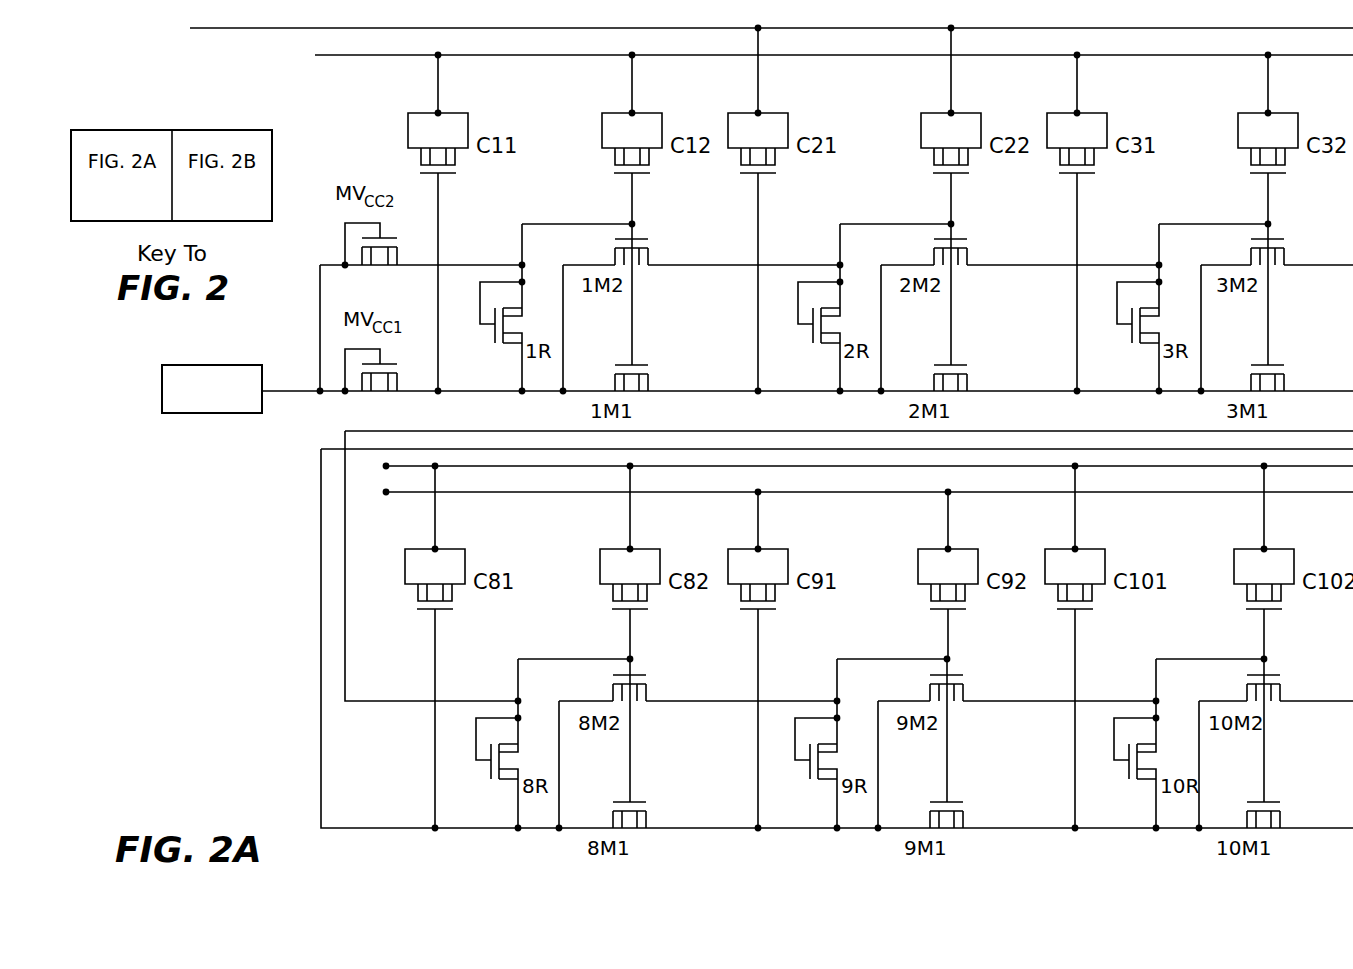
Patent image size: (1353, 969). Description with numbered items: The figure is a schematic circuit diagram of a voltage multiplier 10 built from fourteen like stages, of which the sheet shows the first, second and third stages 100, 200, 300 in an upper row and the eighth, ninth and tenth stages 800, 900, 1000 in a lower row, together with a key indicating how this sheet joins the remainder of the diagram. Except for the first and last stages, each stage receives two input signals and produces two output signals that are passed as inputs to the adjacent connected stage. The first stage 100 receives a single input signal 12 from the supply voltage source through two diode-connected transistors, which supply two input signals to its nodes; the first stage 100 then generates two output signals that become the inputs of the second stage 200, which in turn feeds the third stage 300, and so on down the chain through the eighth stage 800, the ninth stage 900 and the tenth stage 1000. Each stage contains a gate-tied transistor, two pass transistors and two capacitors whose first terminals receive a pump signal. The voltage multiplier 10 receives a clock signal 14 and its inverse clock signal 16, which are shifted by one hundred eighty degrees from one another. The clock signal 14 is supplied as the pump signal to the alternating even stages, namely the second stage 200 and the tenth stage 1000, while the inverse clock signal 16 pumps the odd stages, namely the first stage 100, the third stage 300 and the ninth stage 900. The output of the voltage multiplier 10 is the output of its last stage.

The voltage multiplier 10 is at (266, 566).
The input signal 12 is at (246, 413).
The clock signal CLK 14 is at (217, 28).
The inverse clock signal 16 is at (348, 55).
The first stage 100 is at (577, 209).
The second stage 200 is at (895, 209).
The third stage 300 is at (1213, 209).
The eighth stage 800 is at (574, 645).
The ninth stage 900 is at (892, 645).
The tenth stage 1000 is at (1210, 644).